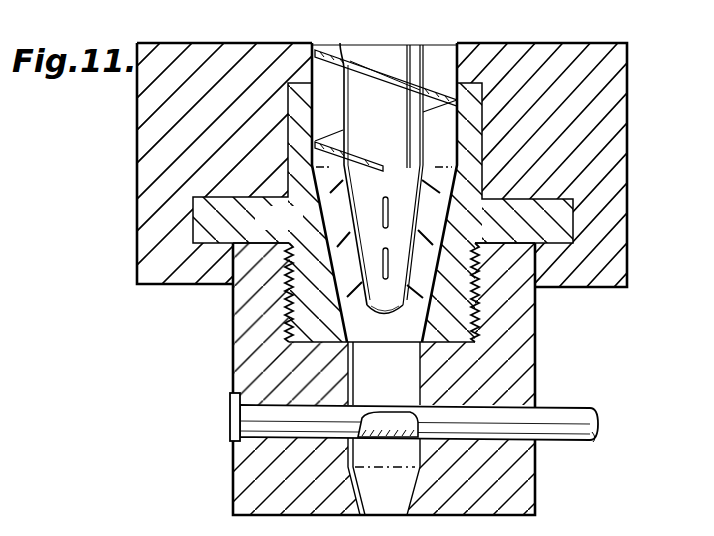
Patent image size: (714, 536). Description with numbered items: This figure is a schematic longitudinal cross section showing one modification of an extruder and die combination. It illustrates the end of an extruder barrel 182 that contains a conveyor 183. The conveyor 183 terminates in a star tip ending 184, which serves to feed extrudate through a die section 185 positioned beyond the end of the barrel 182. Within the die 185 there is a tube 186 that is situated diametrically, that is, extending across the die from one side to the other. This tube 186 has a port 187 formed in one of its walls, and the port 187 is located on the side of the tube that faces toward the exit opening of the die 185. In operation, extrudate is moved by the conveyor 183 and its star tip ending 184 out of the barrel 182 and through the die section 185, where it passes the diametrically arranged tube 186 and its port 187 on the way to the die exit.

The extruder barrel 182 is at (603, 93).
The conveyor 183 is at (394, 50).
The star tip ending 184 is at (367, 200).
The die section 185 is at (512, 337).
The tube 186 is at (552, 407).
The port 187 is at (393, 412).